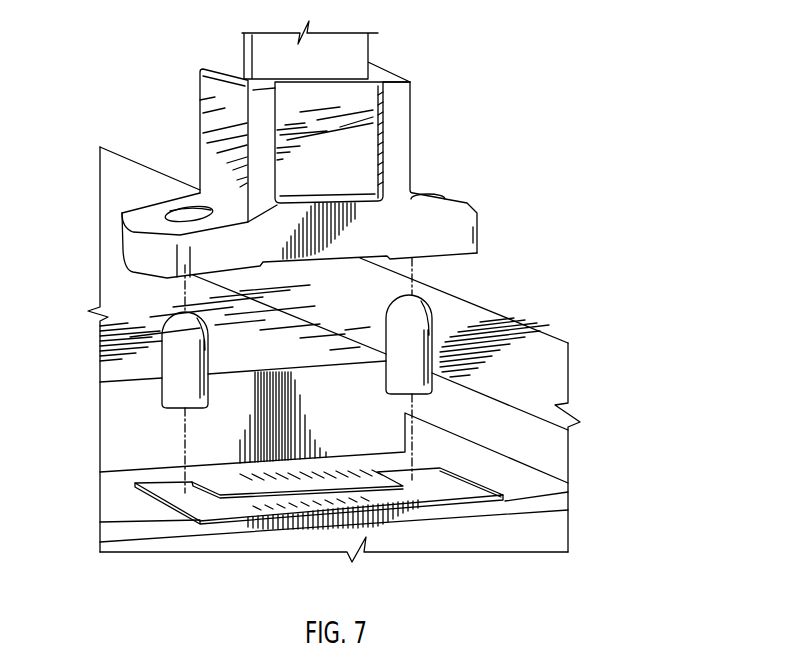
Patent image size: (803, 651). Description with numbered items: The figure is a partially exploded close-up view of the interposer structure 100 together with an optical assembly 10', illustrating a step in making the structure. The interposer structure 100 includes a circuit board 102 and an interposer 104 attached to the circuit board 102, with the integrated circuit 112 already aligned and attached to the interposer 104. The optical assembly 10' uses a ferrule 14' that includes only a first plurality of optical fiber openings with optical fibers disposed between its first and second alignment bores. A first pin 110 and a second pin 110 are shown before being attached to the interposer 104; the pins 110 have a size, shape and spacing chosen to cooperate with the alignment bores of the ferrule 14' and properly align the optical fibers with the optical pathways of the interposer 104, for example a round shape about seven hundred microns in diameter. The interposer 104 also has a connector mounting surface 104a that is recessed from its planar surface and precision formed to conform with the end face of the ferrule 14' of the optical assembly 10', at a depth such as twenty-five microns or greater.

The optical assembly 10' is at (304, 149).
The ferrule 14' is at (435, 167).
The interposer structure 100 is at (476, 302).
The circuit board 102 is at (542, 363).
The interposer 104 is at (518, 485).
The connector mounting surface 104a is at (440, 497).
The alignment pin 110 is at (170, 353).
The integrated circuit 112 is at (133, 307).